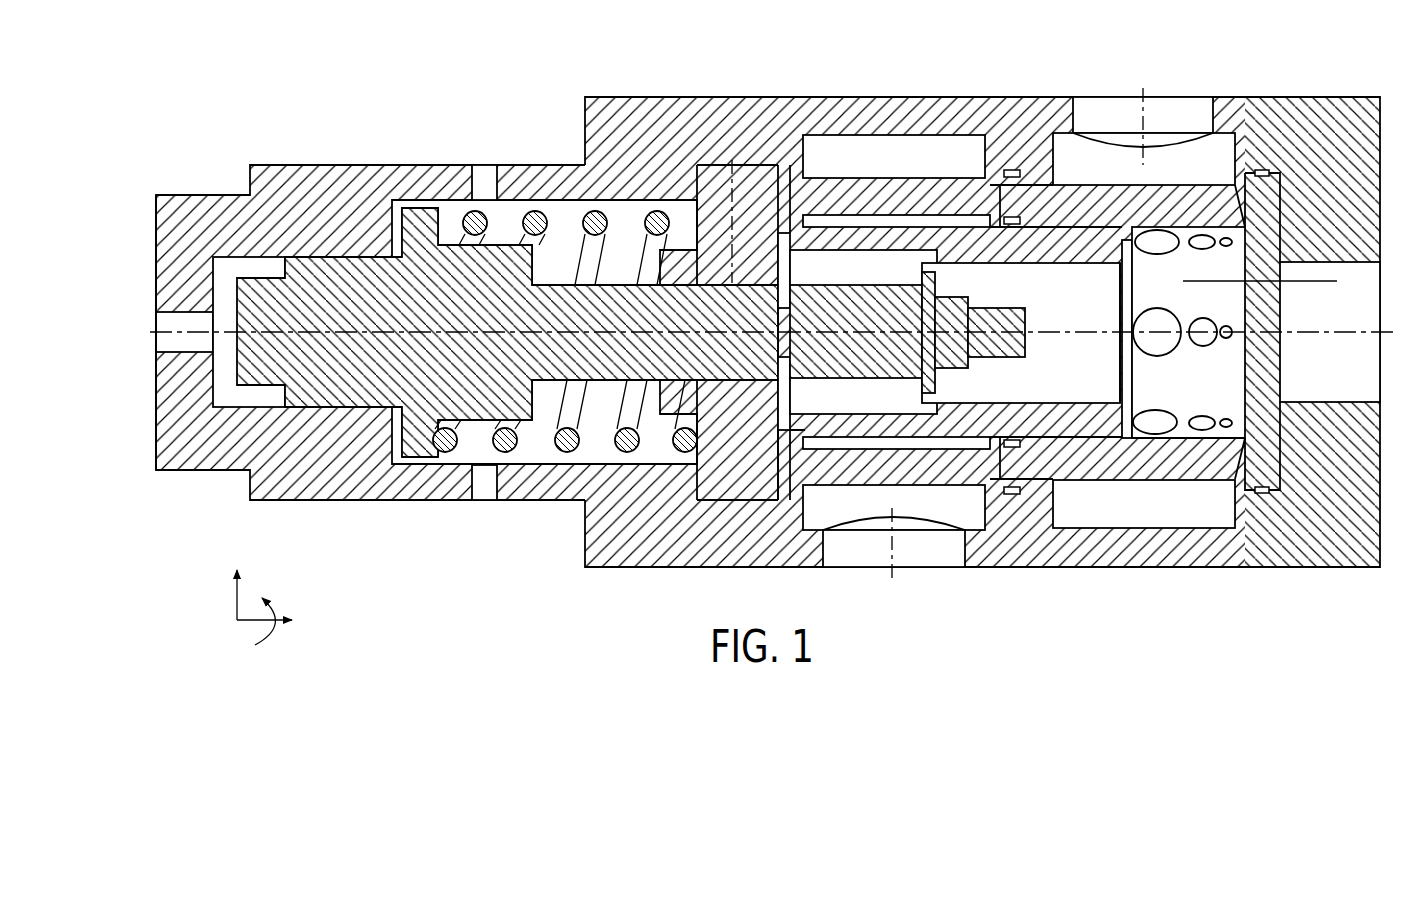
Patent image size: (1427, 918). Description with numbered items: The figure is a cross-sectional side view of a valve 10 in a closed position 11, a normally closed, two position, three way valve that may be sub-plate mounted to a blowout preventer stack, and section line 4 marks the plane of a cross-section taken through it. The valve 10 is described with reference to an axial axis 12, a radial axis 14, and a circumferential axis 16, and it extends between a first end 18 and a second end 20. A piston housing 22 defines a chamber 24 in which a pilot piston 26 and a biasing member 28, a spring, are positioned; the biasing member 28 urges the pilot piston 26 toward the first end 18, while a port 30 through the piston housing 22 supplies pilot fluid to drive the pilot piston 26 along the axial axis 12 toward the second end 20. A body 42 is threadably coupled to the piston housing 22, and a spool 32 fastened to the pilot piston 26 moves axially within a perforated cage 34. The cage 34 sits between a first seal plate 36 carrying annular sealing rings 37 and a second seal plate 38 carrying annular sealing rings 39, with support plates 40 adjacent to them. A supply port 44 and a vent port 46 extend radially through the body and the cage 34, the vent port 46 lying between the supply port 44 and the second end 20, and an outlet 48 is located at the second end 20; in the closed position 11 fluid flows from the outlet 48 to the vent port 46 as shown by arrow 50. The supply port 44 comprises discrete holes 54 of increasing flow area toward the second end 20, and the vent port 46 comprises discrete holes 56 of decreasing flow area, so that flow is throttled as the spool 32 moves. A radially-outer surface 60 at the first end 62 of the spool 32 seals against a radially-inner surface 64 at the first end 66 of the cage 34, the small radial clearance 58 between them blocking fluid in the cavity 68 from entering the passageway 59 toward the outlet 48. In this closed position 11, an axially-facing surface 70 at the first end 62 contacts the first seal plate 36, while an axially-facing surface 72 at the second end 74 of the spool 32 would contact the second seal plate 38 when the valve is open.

The section line 4- 4 is at (732, 162).
The valve 10 is at (505, 96).
The closed position 11 is at (540, 82).
The axial axis 12 is at (250, 624).
The radial axis 14 is at (237, 600).
The circumferential axis 16 is at (268, 604).
The first end 18 is at (146, 224).
The second end 20 is at (1395, 115).
The piston housing 22 is at (290, 186).
The chamber 24 is at (512, 213).
The pilot piston 26 is at (347, 278).
The biasing member 28 is at (590, 222).
The port 30 is at (163, 322).
The spool 32 is at (1020, 250).
The cage 34 is at (960, 292).
The first seal plate 36 is at (776, 168).
The annular sealing rings 37 is at (779, 195).
The second seal plate 38 is at (1282, 210).
The annular sealing rings 39 is at (1262, 170).
The support plates 40 is at (698, 164).
The body 42 is at (900, 104).
The supply port 44 is at (867, 462).
The vent port 46 is at (1100, 114).
The outlet 48 is at (1360, 300).
The arrow 50 is at (1157, 120).
The discrete holes 54 is at (928, 178).
The discrete holes 56 is at (1165, 425).
The radial clearance 58 is at (798, 450).
The passageway 59 is at (1058, 383).
The radially-outer surface 60 is at (781, 230).
The first end 62 is at (812, 252).
The radially-inner surface 64 is at (798, 175).
The first end 66 is at (795, 215).
The cavity 68 is at (1000, 210).
The axially-facing surface 70 is at (775, 445).
The axially-facing surface 72 is at (1150, 440).
The second end 74 is at (1125, 434).